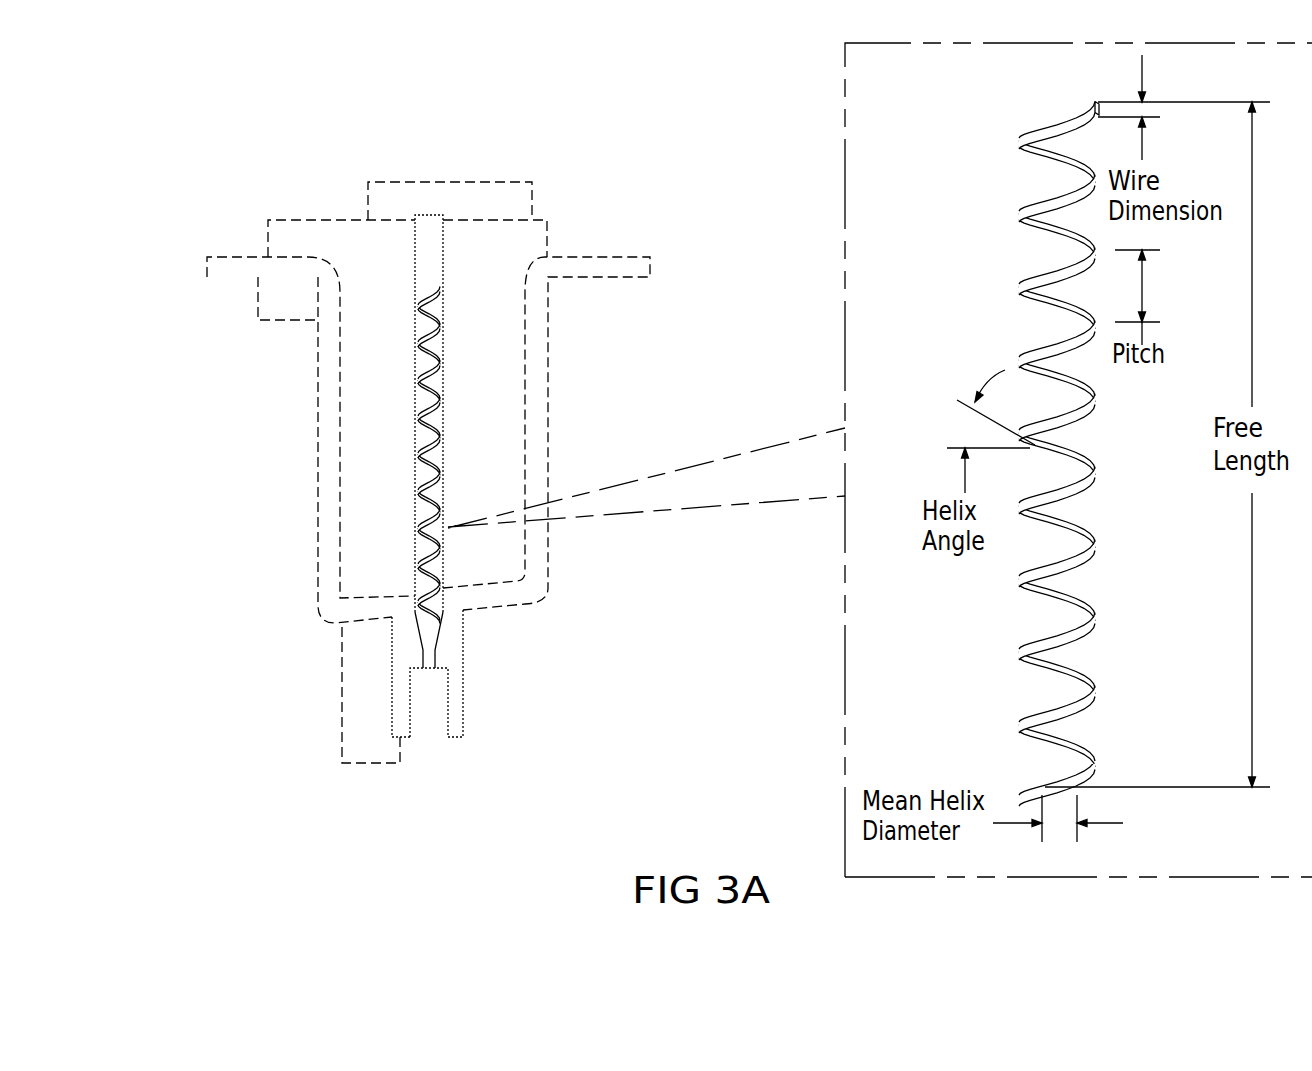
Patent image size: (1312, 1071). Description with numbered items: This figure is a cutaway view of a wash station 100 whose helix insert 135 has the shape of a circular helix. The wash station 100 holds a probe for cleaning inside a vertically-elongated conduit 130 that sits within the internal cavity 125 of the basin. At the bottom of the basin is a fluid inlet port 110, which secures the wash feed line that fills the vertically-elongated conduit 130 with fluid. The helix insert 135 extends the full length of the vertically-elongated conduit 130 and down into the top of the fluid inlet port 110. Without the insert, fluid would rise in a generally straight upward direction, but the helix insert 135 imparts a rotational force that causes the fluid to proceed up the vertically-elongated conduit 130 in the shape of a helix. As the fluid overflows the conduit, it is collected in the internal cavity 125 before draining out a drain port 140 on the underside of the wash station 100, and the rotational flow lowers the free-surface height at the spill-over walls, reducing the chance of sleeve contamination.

The wash station 100 is at (563, 153).
The fluid inlet port 110 is at (455, 703).
The internal cavity 125 is at (358, 408).
The vertically-elongated conduit 130 is at (432, 233).
The helix insert 135 is at (415, 475).
The drain port 140 is at (362, 698).